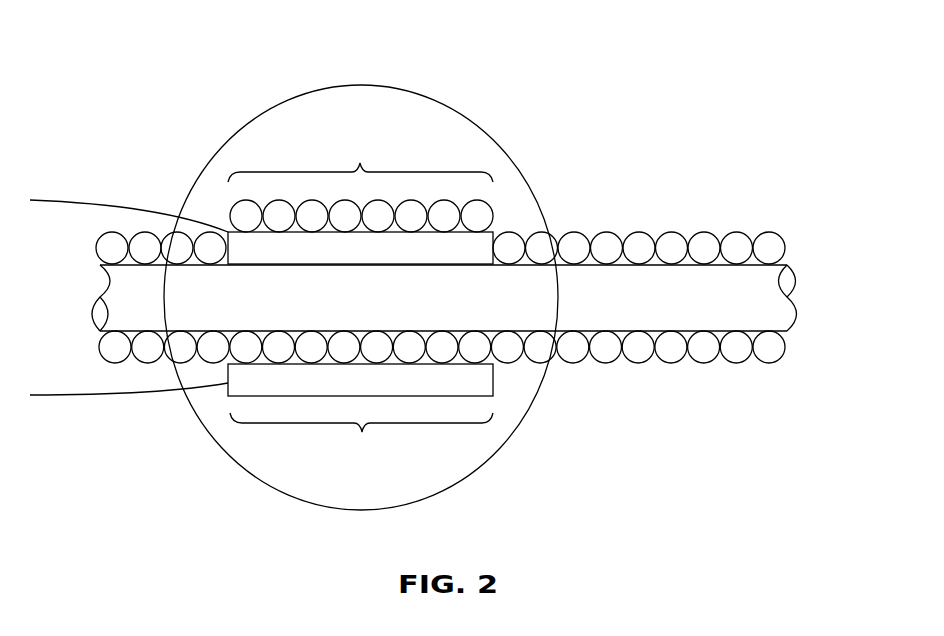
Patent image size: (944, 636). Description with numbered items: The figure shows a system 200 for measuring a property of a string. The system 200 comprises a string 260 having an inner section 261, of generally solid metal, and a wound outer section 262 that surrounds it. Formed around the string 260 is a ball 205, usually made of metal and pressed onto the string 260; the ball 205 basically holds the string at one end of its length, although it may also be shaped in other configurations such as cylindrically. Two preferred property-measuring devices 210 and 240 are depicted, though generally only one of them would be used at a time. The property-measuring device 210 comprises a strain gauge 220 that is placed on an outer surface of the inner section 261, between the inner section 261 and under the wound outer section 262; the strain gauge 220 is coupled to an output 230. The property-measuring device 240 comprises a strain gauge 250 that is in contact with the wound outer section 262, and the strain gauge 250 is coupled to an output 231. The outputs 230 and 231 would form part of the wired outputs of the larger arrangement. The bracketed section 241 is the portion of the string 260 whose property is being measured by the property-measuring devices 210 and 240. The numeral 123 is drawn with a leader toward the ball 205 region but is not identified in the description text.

The processing apparatus portion 123 is at (393, 73).
The system 200 is at (728, 100).
The ball 205 is at (268, 472).
The property-measuring device 210 is at (498, 197).
The strain gauge 220 is at (495, 232).
The output 230 is at (72, 200).
The output 231 is at (130, 397).
The property-measuring device 240 is at (503, 410).
The section 241 is at (360, 299).
The strain gauge 250 is at (495, 378).
The string 260 is at (797, 262).
The inner section 261 is at (703, 309).
The wound outer section 262 is at (673, 245).